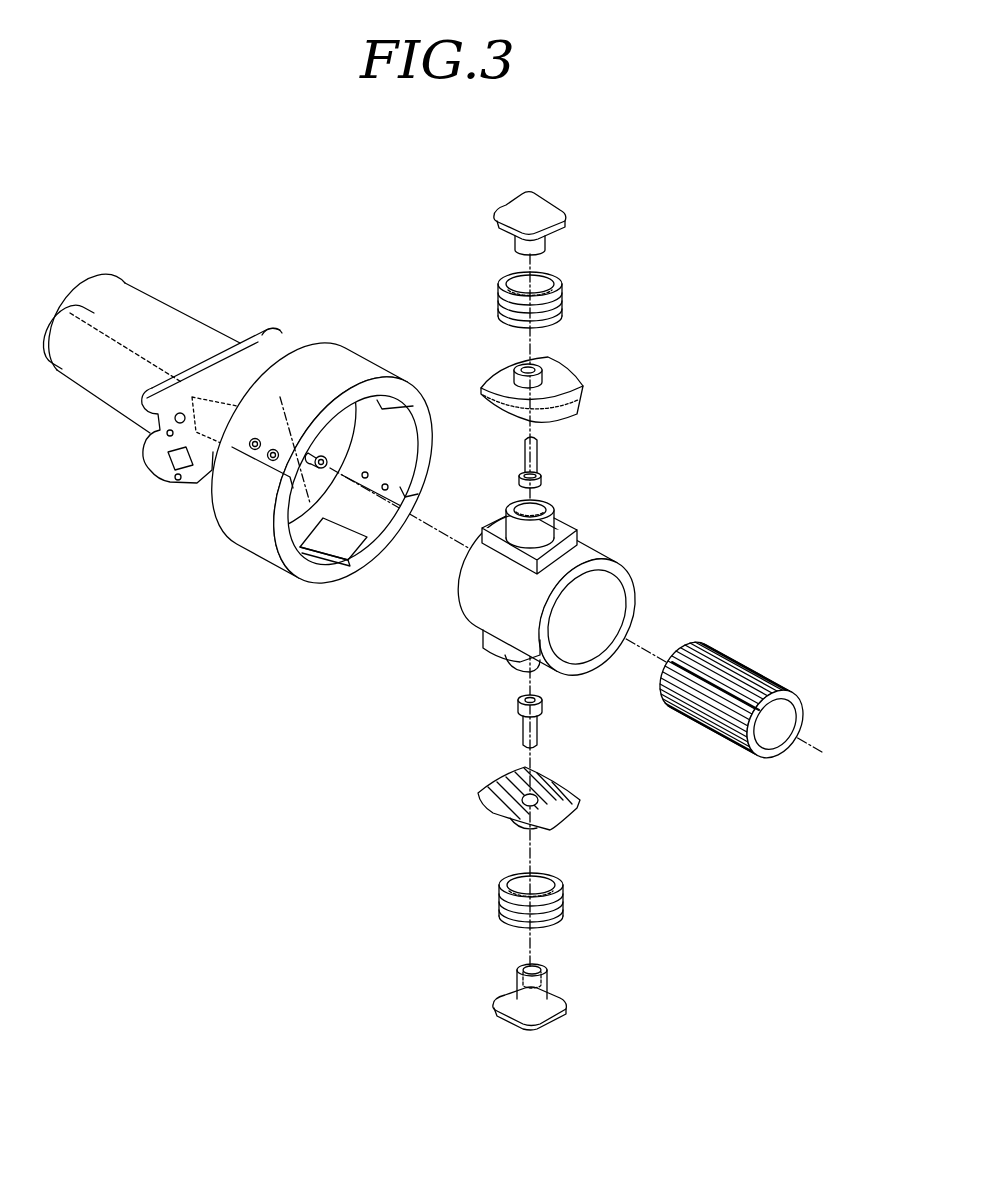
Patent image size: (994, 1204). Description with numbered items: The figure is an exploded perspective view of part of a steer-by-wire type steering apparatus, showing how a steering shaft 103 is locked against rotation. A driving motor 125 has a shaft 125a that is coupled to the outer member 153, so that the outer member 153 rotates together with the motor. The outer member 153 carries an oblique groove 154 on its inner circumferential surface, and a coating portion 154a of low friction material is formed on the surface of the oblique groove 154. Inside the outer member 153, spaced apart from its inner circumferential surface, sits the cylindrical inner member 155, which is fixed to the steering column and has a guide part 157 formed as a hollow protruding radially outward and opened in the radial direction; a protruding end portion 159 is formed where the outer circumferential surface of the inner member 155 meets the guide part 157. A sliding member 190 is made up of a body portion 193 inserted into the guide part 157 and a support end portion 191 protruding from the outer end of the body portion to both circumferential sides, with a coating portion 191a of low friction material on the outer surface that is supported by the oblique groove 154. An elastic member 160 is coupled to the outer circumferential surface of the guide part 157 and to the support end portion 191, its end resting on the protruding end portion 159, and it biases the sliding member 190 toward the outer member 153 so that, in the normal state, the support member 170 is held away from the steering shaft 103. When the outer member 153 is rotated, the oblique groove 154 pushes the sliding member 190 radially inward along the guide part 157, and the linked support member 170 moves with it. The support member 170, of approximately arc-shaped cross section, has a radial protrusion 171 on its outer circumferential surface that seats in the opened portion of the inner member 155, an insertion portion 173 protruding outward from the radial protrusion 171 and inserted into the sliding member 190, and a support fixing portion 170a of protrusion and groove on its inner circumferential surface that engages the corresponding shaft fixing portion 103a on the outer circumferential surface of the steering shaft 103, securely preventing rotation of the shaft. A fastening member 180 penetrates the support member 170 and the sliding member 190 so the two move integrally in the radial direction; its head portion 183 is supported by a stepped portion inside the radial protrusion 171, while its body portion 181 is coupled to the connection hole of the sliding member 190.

The steering shaft 103 is at (737, 687).
The shaft fixing portion 103a is at (712, 737).
The driving motor 125 is at (170, 333).
The shaft of the driving motor 125a is at (325, 440).
The outer member 153 is at (297, 494).
The oblique groove 154 is at (368, 530).
The coating portion 154a is at (330, 552).
The inner member 155 is at (509, 580).
The guide part 157 is at (545, 527).
The protruding end portion 159 is at (567, 521).
The elastic member 160 is at (587, 286).
The support member 170 is at (505, 572).
The support fixing portion 170a is at (567, 792).
The radial protrusion 171 is at (570, 383).
The insertion portion 173 is at (523, 367).
The fastening member 180 is at (541, 588).
The body portion of the fastening member 181 is at (537, 453).
The head portion of the fastening member 183 is at (540, 482).
The sliding member 190 is at (483, 584).
The support end portion 191 is at (521, 187).
The coating portion 191a is at (503, 213).
The body portion 193 is at (517, 243).